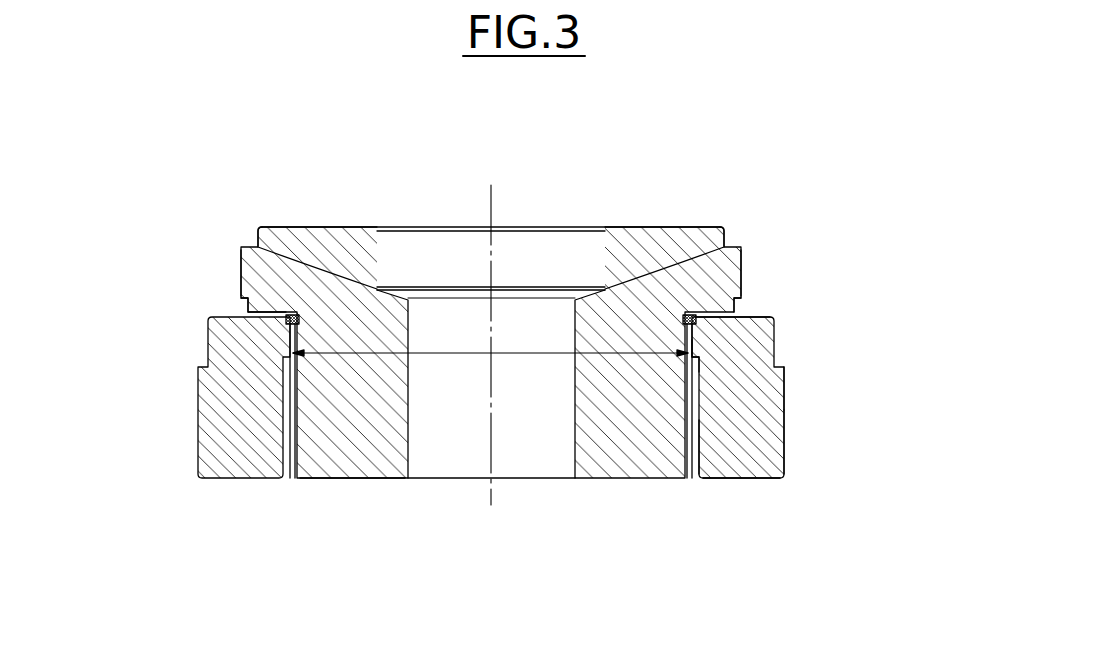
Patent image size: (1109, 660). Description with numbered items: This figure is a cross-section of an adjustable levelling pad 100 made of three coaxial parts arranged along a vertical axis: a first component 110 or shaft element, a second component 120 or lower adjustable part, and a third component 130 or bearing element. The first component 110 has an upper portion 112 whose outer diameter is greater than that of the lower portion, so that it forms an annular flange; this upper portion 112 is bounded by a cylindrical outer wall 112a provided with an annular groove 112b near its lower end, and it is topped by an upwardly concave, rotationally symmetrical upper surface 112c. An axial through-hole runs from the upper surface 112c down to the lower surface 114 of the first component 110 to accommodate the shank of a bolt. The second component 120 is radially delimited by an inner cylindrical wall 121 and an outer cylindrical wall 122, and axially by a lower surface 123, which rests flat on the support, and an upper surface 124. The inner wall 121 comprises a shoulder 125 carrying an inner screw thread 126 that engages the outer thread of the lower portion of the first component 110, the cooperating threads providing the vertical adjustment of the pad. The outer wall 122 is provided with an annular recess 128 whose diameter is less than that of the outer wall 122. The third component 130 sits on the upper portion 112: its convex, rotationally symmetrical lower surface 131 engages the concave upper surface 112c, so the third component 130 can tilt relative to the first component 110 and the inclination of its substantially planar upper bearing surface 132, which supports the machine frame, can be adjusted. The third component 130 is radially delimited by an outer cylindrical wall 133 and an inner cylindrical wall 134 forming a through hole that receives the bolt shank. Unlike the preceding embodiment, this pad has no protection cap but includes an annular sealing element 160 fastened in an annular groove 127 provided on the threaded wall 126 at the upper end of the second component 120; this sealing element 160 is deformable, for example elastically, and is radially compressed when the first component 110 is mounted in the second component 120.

The adjustable levelling pad 100 is at (758, 174).
The first component 110 is at (230, 288).
The upper portion 112 is at (241, 268).
The cylindrical outer wall 112a is at (742, 273).
The annular groove 112b is at (737, 303).
The upper surface 112c is at (725, 235).
The lower surface 114 is at (343, 478).
The second component 120 is at (188, 417).
The inner cylindrical wall 121 is at (690, 460).
The outer cylindrical wall 122 is at (784, 452).
The lower surface 123 is at (745, 480).
The upper surface 124 is at (717, 311).
The shoulder 125 is at (700, 358).
The inner screw thread 126 is at (684, 346).
The annular groove 127 is at (247, 302).
The annular recess 128 is at (775, 390).
The third component 130 is at (236, 237).
The lower surface 131 is at (355, 297).
The upper bearing surface 132 is at (311, 228).
The outer cylindrical wall 133 is at (257, 235).
The inner cylindrical wall 134 is at (605, 255).
The annular sealing element 160 is at (286, 317).